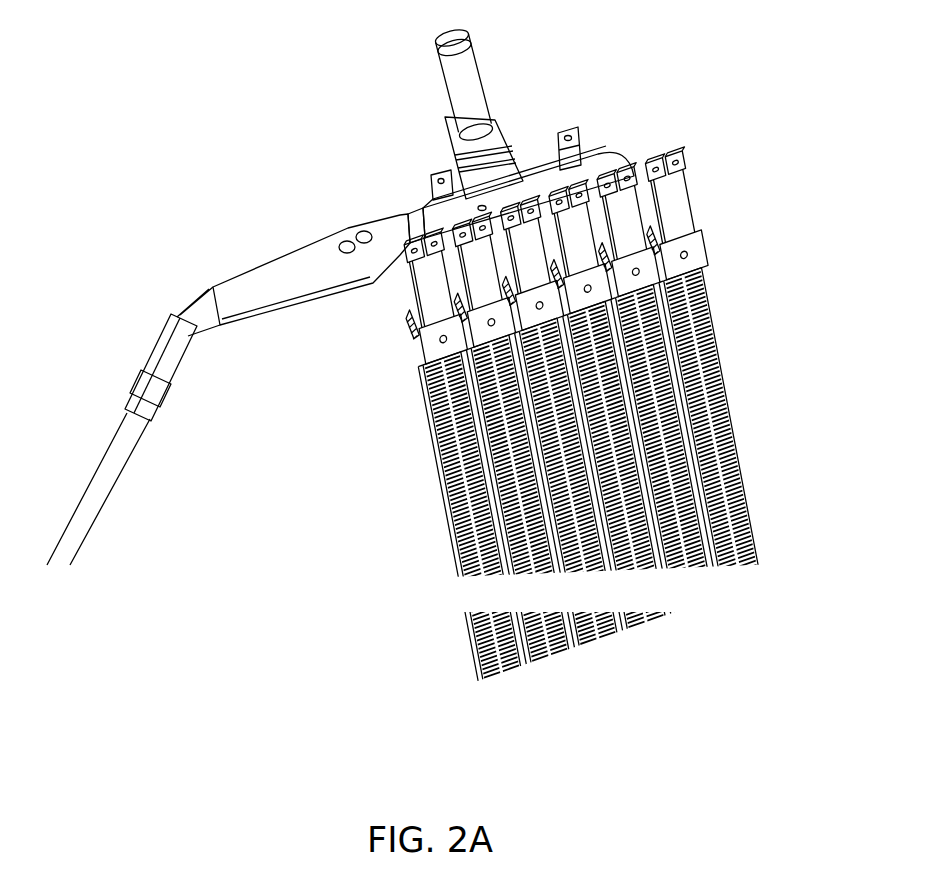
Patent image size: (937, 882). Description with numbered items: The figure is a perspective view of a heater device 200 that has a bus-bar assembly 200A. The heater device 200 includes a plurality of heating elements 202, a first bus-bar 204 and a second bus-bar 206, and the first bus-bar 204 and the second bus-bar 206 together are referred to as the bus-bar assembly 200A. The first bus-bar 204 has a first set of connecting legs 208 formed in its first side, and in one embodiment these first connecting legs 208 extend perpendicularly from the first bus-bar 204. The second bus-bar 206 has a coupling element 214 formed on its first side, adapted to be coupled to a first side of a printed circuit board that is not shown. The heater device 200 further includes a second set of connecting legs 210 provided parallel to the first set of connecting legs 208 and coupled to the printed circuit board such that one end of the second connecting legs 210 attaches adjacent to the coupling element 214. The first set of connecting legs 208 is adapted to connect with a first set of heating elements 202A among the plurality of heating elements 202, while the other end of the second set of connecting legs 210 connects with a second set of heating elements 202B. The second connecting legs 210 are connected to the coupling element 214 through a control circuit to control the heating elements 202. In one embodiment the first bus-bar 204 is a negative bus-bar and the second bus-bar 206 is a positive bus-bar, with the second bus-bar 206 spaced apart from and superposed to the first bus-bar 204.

The heater device 200 is at (429, 417).
The bus-bar assembly 200A is at (428, 151).
The plurality of heating elements 202 is at (533, 377).
The first set of heating elements 202A is at (570, 481).
The second set of heating elements 202B is at (592, 475).
The first bus-bar 204 is at (487, 133).
The second bus-bar 206 is at (590, 170).
The first set of connecting legs 208 is at (551, 247).
The second set of connecting legs 210 is at (546, 205).
The coupling element 214 is at (467, 233).